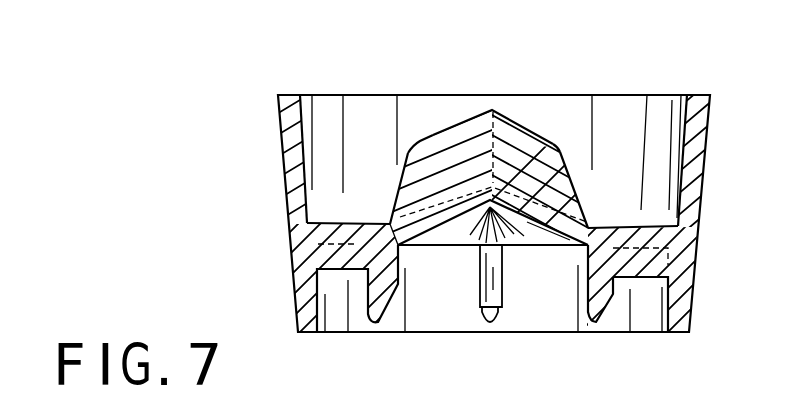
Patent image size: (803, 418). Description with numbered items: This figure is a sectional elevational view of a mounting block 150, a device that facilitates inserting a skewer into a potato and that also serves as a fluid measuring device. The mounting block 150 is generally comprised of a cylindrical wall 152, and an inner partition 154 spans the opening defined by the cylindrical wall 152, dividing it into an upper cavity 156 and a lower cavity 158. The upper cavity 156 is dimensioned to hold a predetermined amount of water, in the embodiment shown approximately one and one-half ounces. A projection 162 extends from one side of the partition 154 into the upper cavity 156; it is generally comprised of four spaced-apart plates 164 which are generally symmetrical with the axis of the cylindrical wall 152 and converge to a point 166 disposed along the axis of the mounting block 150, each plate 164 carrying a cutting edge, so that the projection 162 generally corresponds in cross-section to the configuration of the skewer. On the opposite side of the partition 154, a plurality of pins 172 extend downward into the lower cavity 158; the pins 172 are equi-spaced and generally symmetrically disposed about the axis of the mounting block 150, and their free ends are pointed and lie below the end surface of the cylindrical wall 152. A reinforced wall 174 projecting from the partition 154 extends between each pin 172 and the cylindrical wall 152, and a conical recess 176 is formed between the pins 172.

The mounting block 150 is at (264, 245).
The cylindrical wall 152 is at (287, 151).
The inner partition 154 is at (345, 221).
The upper cavity 156 is at (662, 136).
The lower cavity 158 is at (647, 308).
The projection 162 is at (526, 120).
The plates 164 is at (430, 140).
The point 166 is at (490, 100).
The pins 172 is at (368, 300).
The reinforced wall 174 is at (330, 248).
The conical recess 176 is at (460, 250).